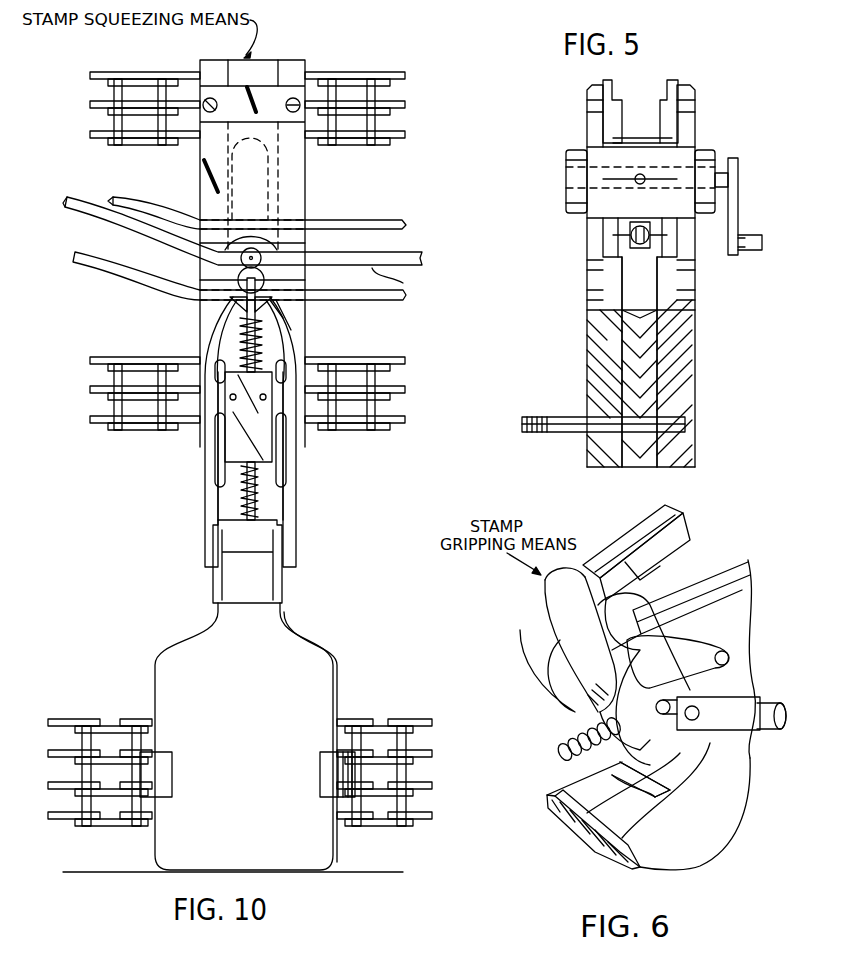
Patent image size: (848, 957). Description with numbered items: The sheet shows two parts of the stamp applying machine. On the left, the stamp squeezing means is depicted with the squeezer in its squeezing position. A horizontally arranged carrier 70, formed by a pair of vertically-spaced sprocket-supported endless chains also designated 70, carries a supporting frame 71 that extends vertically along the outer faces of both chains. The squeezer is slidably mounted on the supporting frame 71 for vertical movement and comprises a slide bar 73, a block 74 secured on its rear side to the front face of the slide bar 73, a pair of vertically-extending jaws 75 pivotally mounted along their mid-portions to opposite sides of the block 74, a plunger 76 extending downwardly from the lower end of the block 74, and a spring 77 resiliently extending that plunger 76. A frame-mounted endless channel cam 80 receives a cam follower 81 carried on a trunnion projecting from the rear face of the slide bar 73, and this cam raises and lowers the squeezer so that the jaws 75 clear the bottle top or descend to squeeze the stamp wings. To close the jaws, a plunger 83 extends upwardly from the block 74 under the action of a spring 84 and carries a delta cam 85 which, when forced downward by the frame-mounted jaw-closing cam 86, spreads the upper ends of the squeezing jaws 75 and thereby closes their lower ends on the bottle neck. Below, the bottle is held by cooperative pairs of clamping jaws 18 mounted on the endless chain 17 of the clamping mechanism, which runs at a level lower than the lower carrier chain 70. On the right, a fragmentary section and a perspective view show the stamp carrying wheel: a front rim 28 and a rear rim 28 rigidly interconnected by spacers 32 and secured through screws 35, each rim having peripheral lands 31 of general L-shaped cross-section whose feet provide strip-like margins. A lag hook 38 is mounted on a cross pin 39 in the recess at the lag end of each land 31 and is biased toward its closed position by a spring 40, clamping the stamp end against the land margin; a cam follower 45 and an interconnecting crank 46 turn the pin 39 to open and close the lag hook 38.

In FIG. 10, the carrier 70 is at (125, 72).
In FIG. 10, the supporting frame 71 is at (218, 192).
In FIG. 10, the slide bar 73 is at (242, 78).
In FIG. 10, the block 74 is at (260, 438).
In FIG. 10, the squeezing jaws 75 is at (298, 358).
In FIG. 10, the plunger 76 is at (258, 488).
In FIG. 10, the spring 77 is at (258, 505).
In FIG. 10, the endless channel cam 80 is at (315, 230).
In FIG. 10, the cam follower 81 is at (262, 240).
In FIG. 10, the plunger 83 is at (242, 356).
In FIG. 10, the spring 84 is at (240, 330).
In FIG. 10, the delta cam 85 is at (282, 305).
In FIG. 10, the jaw-closing cam 86 is at (403, 280).
In FIG. 10, the endless chain 17 is at (356, 720).
In FIG. 10, the clamping jaws 18 is at (320, 772).
In FIG. 5, the rim 28 is at (597, 352).
In FIG. 6, the rim 28 is at (693, 557).
In FIG. 6, the land 31 is at (620, 535).
In FIG. 5, the spacer 32 is at (635, 452).
In FIG. 6, the spacer 32 is at (582, 847).
In FIG. 5, the screw 35 is at (522, 428).
In FIG. 5, the lag hook 38 is at (672, 80).
In FIG. 6, the lag hook 38 is at (555, 592).
In FIG. 5, the cross pin 39 is at (718, 172).
In FIG. 6, the cross pin 39 is at (698, 750).
In FIG. 6, the spring 40 is at (565, 752).
In FIG. 5, the cam follower 45 is at (758, 245).
In FIG. 6, the cam follower 45 is at (757, 733).
In FIG. 5, the crank 46 is at (735, 198).
In FIG. 6, the crank 46 is at (736, 721).